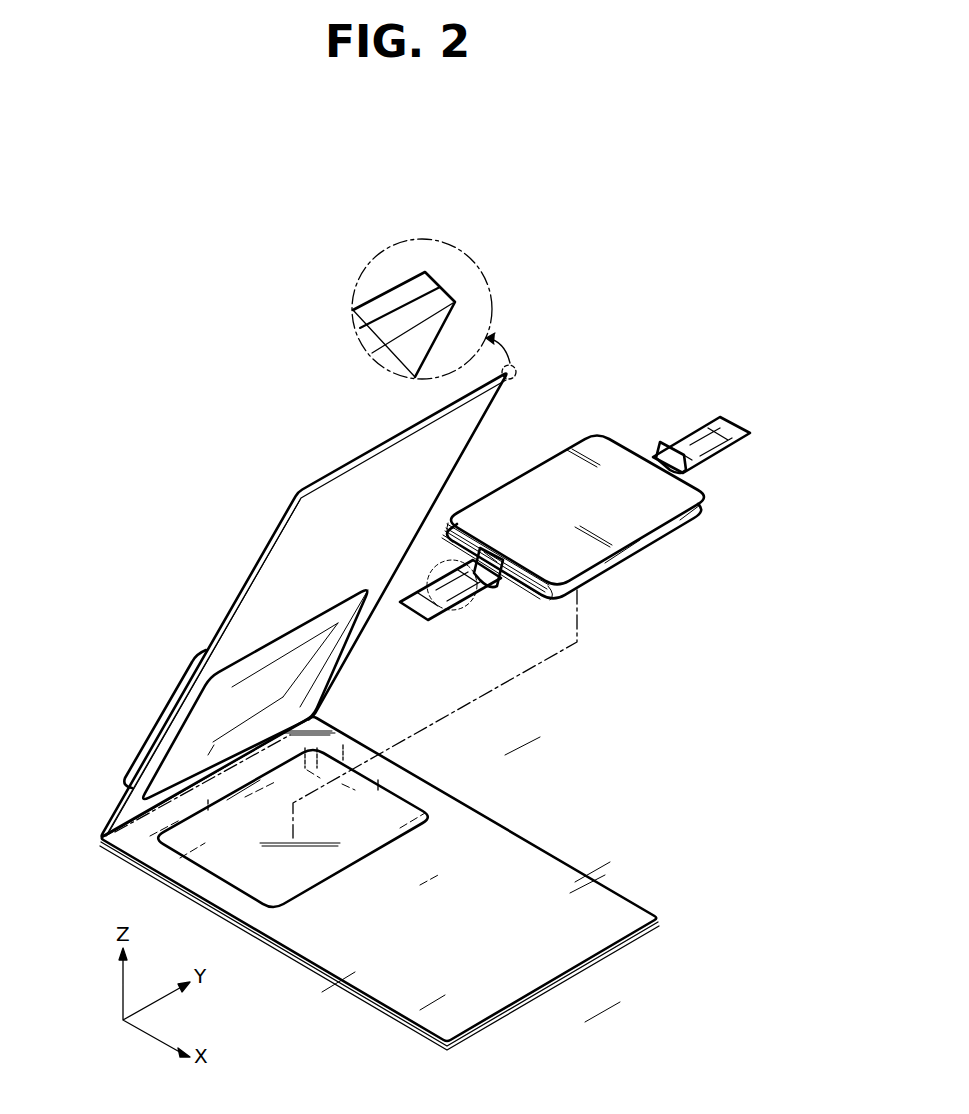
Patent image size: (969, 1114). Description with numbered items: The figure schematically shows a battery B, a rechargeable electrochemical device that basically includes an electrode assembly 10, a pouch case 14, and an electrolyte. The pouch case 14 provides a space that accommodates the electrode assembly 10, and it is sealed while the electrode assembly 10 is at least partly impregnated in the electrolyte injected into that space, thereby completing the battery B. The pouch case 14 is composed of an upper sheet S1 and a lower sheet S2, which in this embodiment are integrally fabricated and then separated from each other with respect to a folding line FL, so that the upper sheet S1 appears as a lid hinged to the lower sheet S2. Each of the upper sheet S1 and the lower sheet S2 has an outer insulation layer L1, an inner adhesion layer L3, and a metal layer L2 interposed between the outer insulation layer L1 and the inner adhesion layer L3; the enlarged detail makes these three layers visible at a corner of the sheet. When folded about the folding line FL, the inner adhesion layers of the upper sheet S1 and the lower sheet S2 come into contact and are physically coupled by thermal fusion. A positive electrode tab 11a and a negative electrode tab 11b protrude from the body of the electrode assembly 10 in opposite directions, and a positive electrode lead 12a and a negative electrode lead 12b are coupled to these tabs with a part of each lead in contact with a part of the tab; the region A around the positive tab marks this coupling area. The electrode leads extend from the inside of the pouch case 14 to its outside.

The electrode assembly 10 is at (600, 398).
The positive electrode tab 11a is at (489, 584).
The negative electrode tab 11b is at (688, 466).
The positive electrode lead 12a is at (423, 612).
The negative electrode lead 12b is at (721, 421).
The pouch case 14 is at (336, 883).
The upper sheet S1 is at (118, 812).
The lower sheet S2 is at (358, 948).
The battery B is at (189, 590).
The folding line FL is at (316, 724).
The region A is at (480, 592).
The outer insulation layer L1 is at (432, 270).
The metal layer L2 is at (448, 286).
The inner adhesion layer L3 is at (458, 303).